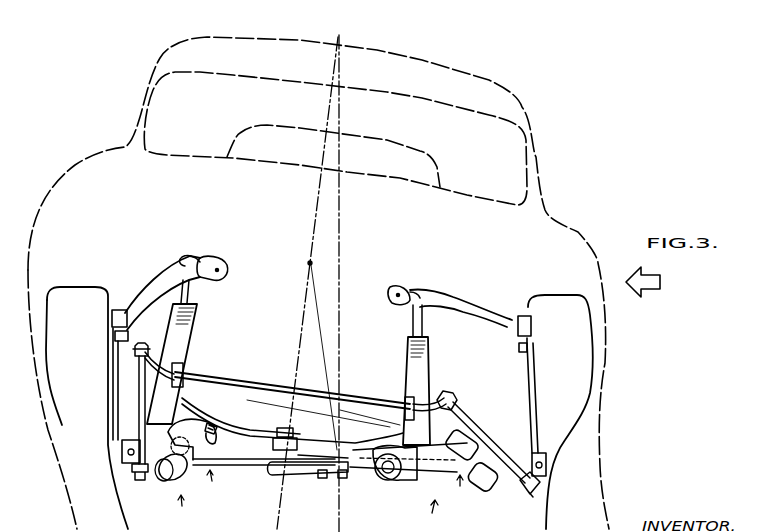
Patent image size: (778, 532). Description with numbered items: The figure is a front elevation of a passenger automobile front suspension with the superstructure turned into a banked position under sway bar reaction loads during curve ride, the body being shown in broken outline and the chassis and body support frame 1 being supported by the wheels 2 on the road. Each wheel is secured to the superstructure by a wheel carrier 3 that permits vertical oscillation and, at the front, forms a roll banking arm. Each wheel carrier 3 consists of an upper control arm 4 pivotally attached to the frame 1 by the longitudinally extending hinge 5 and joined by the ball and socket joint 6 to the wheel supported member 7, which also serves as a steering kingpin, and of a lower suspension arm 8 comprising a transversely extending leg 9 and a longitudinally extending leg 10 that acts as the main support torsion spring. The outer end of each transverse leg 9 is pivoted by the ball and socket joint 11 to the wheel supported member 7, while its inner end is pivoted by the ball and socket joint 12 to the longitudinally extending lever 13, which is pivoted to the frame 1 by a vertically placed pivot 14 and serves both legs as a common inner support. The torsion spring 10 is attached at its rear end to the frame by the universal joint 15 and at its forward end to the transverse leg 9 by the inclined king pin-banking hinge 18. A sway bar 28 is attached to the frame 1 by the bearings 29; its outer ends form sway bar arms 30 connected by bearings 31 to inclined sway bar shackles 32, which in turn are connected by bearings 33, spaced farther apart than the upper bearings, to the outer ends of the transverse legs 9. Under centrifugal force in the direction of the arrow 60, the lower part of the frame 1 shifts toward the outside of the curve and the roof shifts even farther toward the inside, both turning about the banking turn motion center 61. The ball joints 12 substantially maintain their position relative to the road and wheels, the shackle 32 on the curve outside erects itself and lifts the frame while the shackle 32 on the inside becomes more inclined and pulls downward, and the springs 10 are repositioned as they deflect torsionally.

The frame 1 is at (536, 172).
The wheels 2 is at (71, 496).
The wheel carrier 3 is at (307, 513).
The upper control arm 4 is at (155, 280).
The hinge 5 is at (200, 260).
The ball and socket joint 6 is at (117, 310).
The wheel supported member 7 is at (111, 371).
The lower suspension arm 8 is at (334, 488).
The transversely extending leg 9 is at (247, 461).
The longitudinally extending leg 10 is at (195, 460).
The ball and socket joint 11 is at (123, 449).
The ball and socket joint 12 is at (320, 478).
The longitudinally extending lever 13 is at (302, 475).
The pivot 14 is at (285, 428).
The universal joint 15 is at (205, 428).
The hinge 18 is at (172, 475).
The sway bar 28 is at (373, 397).
The bearings 29 is at (185, 375).
The sway bar arms 30 is at (168, 345).
The bearings 31 is at (143, 344).
The sway bar shackles 32 is at (139, 393).
The bearings 33 is at (275, 352).
The arrow 60 is at (660, 282).
The banking turn motion center 61 is at (309, 263).